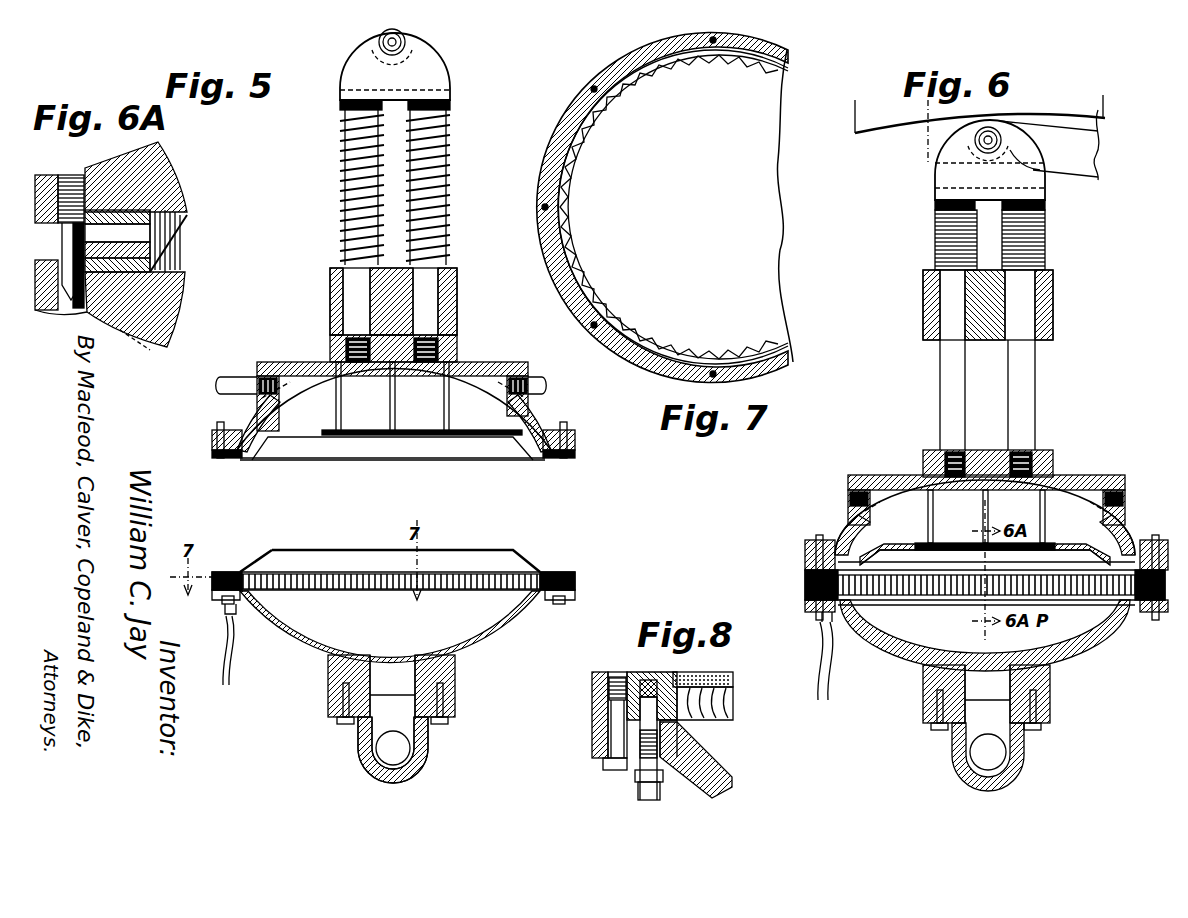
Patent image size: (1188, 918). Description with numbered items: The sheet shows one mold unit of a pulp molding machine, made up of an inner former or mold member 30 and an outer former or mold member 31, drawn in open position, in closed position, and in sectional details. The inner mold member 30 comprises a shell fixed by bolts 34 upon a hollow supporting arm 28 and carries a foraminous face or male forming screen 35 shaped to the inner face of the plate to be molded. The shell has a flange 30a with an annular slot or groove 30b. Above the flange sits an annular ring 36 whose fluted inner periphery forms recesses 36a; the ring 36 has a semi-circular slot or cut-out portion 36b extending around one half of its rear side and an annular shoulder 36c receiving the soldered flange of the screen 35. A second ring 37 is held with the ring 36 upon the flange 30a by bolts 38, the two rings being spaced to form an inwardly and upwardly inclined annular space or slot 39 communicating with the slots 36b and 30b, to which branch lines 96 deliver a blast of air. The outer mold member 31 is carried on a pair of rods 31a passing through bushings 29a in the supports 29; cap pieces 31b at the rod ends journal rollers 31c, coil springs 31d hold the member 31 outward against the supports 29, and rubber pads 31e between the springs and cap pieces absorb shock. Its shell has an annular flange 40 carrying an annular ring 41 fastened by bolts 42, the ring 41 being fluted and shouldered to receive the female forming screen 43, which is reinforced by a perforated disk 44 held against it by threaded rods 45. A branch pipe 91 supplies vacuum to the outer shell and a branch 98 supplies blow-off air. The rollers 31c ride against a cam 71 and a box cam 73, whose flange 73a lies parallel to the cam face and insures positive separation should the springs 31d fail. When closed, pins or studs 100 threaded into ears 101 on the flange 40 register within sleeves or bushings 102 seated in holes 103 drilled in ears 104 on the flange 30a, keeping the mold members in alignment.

In FIG. 5, the hollow supporting arm 28 is at (426, 768).
In FIG. 6, the hollow supporting arm 28 is at (1022, 750).
In FIG. 5, the support 29 is at (330, 292).
In FIG. 6, the support 29 is at (1053, 282).
In FIG. 5, the bushing 29a is at (332, 270).
In FIG. 5, the inner former or mold member 30 is at (470, 650).
In FIG. 7, the inner former or mold member 30 is at (776, 285).
In FIG. 6, the inner former or mold member 30 is at (1085, 640).
In FIG. 6A, the inner former or mold member 30 is at (165, 300).
In FIG. 8, the inner former or mold member 30 is at (732, 780).
In FIG. 6A, the flange 30a is at (130, 335).
In FIG. 8, the flange 30a is at (606, 770).
In FIG. 5, the annular slot or groove 30b is at (228, 614).
In FIG. 8, the annular slot or groove 30b is at (657, 745).
In FIG. 5, the outer former or mold member 31 is at (460, 395).
In FIG. 6, the outer former or mold member 31 is at (1118, 538).
In FIG. 6A, the outer former or mold member 31 is at (140, 178).
In FIG. 5, the rod 31a is at (428, 176).
In FIG. 6, the rod 31a is at (960, 403).
In FIG. 5, the cap piece 31b is at (420, 62).
In FIG. 6, the cap piece 31b is at (948, 170).
In FIG. 5, the roller 31c is at (406, 37).
In FIG. 6, the roller 31c is at (928, 135).
In FIG. 5, the coil spring 31d is at (450, 138).
In FIG. 6, the coil spring 31d is at (935, 248).
In FIG. 5, the rubber pad 31e is at (450, 104).
In FIG. 6, the rubber pad 31e is at (935, 204).
In FIG. 5, the bolt 34 is at (340, 724).
In FIG. 5, the male forming screen 35 is at (470, 551).
In FIG. 6, the male forming screen 35 is at (1060, 575).
In FIG. 6A, the male forming screen 35 is at (150, 250).
In FIG. 8, the male forming screen 35 is at (715, 665).
In FIG. 7, the annular ring 36 is at (790, 345).
In FIG. 8, the annular ring 36 is at (608, 712).
In FIG. 7, the recess 36a is at (600, 118).
In FIG. 8, the recess 36a is at (685, 722).
In FIG. 5, the semi-circular slot or cut-out portion 36b is at (262, 540).
In FIG. 7, the semi-circular slot or cut-out portion 36b is at (640, 75).
In FIG. 8, the semi-circular slot or cut-out portion 36b is at (640, 680).
In FIG. 8, the annular shoulder 36c is at (700, 700).
In FIG. 7, the ring 37 is at (600, 78).
In FIG. 8, the ring 37 is at (592, 688).
In FIG. 5, the bolt 38 is at (222, 604).
In FIG. 7, the bolt 38 is at (568, 222).
In FIG. 8, the bolt 38 is at (609, 745).
In FIG. 8, the inclined annular space or slot 39 is at (650, 690).
In FIG. 5, the annular flange 40 is at (575, 443).
In FIG. 6A, the annular flange 40 is at (108, 170).
In FIG. 5, the annular ring 41 is at (560, 460).
In FIG. 5, the bolt 42 is at (563, 420).
In FIG. 5, the female forming screen 43 is at (298, 440).
In FIG. 6, the female forming screen 43 is at (1080, 552).
In FIG. 6A, the female forming screen 43 is at (160, 232).
In FIG. 5, the metal ring or perforated disk 44 is at (392, 438).
In FIG. 6, the metal ring or perforated disk 44 is at (960, 540).
In FIG. 5, the threaded rod 45 is at (390, 405).
In FIG. 6, the threaded rod 45 is at (935, 520).
In FIG. 6, the cam 71 is at (1100, 120).
In FIG. 6, the box cam 73 is at (1075, 150).
In FIG. 6, the flange 73a is at (1073, 173).
In FIG. 5, the branch pipe 91 is at (528, 385).
In FIG. 5, the branch line 96 is at (232, 650).
In FIG. 7, the branch line 96 is at (548, 210).
In FIG. 6, the branch line 96 is at (828, 670).
In FIG. 8, the branch line 96 is at (638, 790).
In FIG. 5, the branch 98 is at (232, 378).
In FIG. 6A, the pin or stud 100 is at (62, 250).
In FIG. 6A, the ear or projection 101 is at (42, 175).
In FIG. 6A, the sleeve or bushing 102 is at (80, 300).
In FIG. 6A, the hole 103 is at (90, 300).
In FIG. 6A, the ear 104 is at (45, 312).